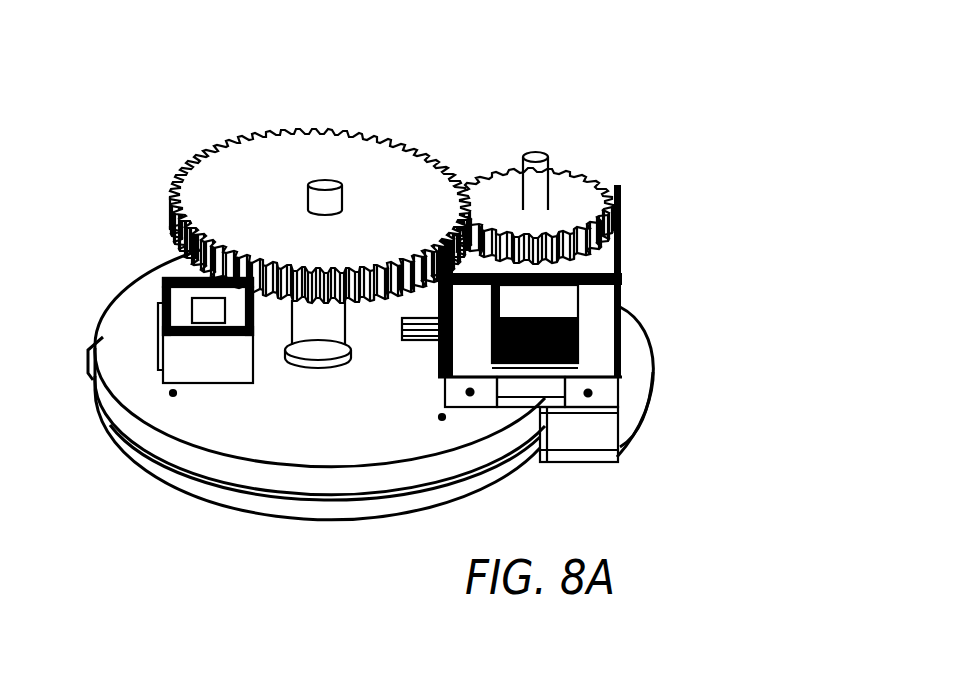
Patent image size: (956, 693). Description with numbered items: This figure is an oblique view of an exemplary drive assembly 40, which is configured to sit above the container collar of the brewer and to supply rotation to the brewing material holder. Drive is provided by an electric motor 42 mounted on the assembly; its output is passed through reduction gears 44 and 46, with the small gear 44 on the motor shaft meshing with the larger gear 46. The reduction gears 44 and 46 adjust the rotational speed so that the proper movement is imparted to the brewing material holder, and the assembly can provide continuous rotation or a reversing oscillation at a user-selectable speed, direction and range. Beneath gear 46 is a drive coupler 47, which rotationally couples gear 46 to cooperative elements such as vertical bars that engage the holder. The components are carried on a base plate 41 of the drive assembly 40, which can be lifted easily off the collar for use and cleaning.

The drive assembly 40 is at (746, 207).
The base plate 41 is at (330, 421).
The electric motor 42 is at (595, 331).
The reduction gear 44 is at (568, 202).
The reduction gear 46 is at (272, 173).
The drive coupler 47 is at (293, 360).